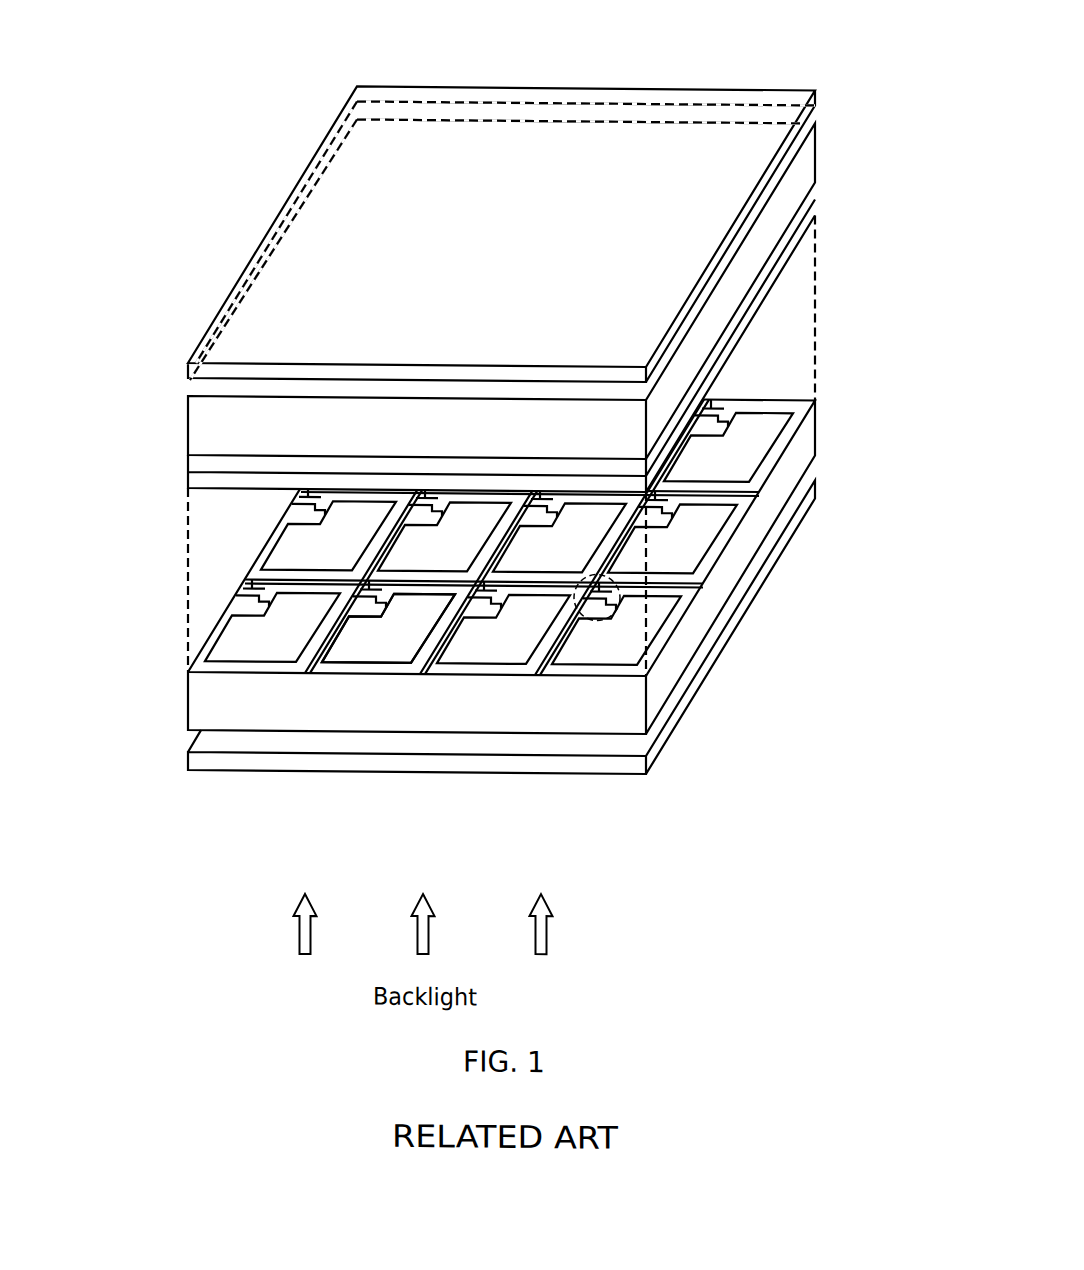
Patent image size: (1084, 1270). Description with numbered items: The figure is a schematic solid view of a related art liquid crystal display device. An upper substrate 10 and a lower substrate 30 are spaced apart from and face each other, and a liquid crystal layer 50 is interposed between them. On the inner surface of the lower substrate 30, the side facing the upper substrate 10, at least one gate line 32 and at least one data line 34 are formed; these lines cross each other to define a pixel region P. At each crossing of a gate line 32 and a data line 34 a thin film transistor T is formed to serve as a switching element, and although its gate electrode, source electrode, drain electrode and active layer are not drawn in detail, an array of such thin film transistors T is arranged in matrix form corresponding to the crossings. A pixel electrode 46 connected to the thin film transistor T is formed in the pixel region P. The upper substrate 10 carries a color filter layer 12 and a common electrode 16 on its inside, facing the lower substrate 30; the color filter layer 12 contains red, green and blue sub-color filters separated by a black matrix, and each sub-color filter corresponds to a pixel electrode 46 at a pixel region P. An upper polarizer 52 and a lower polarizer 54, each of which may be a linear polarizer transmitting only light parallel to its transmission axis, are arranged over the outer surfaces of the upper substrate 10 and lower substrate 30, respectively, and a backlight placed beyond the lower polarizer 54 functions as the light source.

The upper substrate 10 is at (506, 305).
The color filter layer 12 is at (815, 178).
The common electrode 16 is at (815, 206).
The lower substrate 30 is at (202, 700).
The gate line 32 is at (513, 580).
The data line 34 is at (543, 593).
The pixel electrode 46 is at (663, 624).
The liquid crystal layer 50 is at (482, 628).
The upper polarizer 52 is at (734, 85).
The lower polarizer 54 is at (773, 550).
The pixel region P is at (369, 672).
The thin film transistor T is at (597, 617).